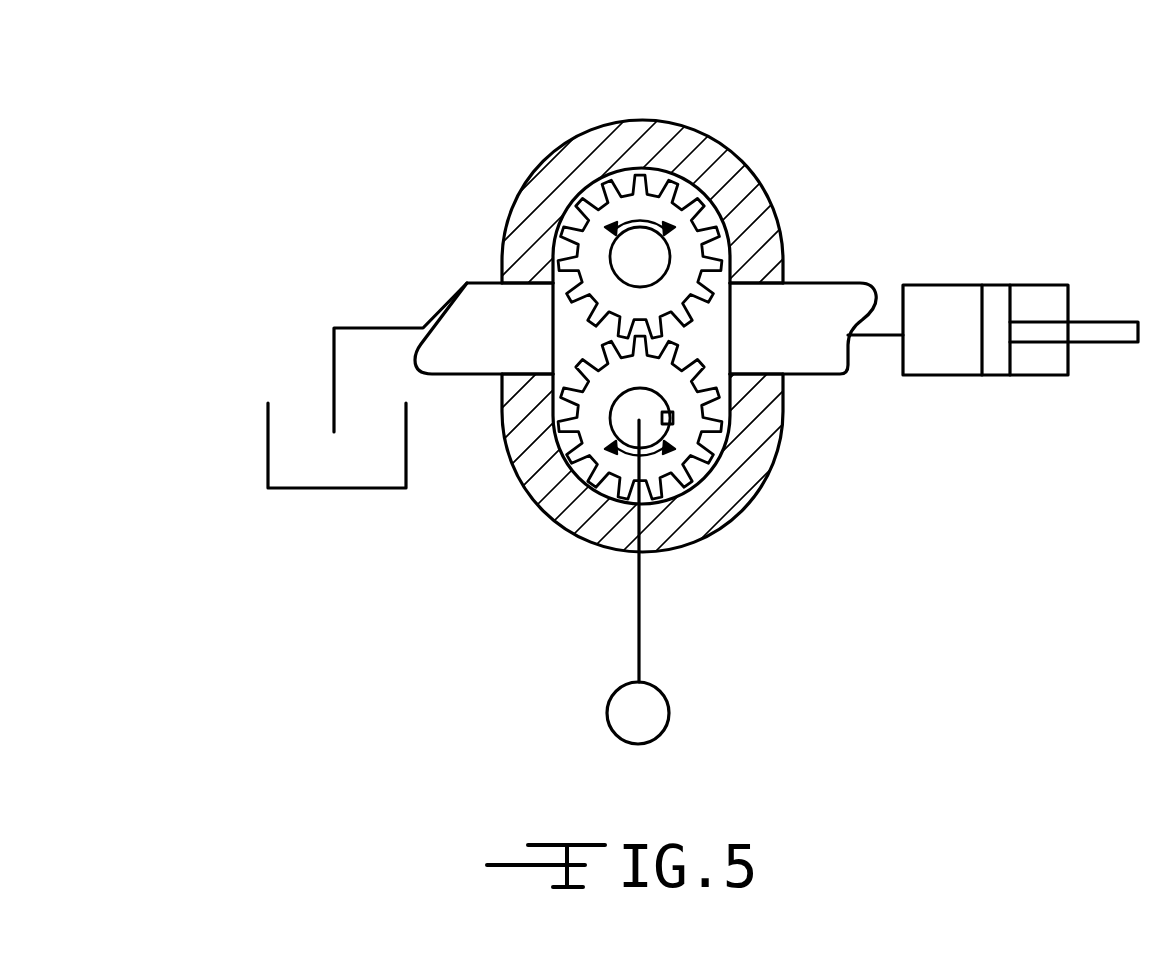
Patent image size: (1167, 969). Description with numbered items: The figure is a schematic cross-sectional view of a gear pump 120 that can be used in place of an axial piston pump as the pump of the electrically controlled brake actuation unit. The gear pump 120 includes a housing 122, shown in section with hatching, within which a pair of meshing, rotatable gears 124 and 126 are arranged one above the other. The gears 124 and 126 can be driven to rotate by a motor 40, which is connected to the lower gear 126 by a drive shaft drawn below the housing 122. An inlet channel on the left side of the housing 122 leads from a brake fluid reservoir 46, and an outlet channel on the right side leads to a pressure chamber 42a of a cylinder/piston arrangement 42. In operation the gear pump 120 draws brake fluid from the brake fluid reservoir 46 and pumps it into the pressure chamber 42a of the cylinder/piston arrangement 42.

The gear pump 120 is at (610, 351).
The housing 122 is at (548, 197).
The gear 124 is at (658, 197).
The gear 126 is at (600, 473).
The motor 40 is at (669, 710).
The cylinder/piston arrangement 42 is at (1020, 287).
The pressure chamber 42a is at (933, 302).
The brake fluid reservoir 46 is at (309, 432).